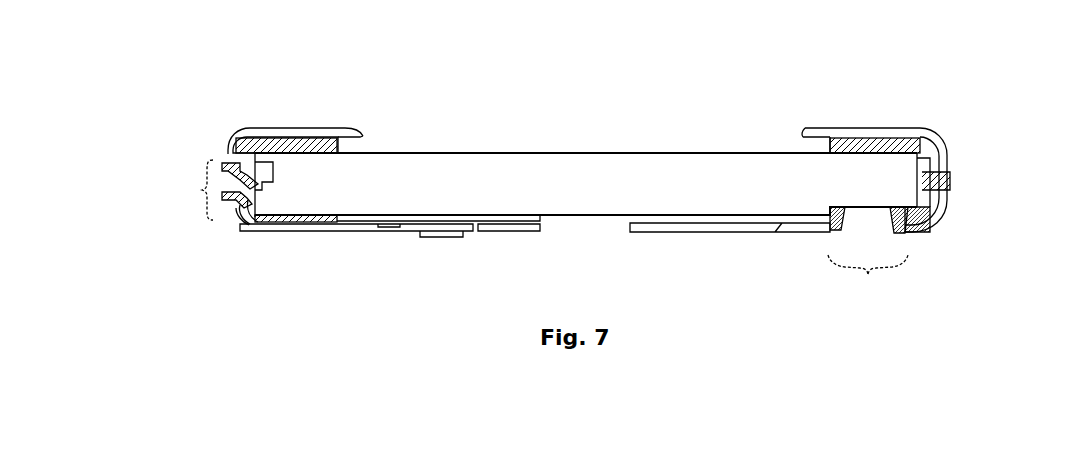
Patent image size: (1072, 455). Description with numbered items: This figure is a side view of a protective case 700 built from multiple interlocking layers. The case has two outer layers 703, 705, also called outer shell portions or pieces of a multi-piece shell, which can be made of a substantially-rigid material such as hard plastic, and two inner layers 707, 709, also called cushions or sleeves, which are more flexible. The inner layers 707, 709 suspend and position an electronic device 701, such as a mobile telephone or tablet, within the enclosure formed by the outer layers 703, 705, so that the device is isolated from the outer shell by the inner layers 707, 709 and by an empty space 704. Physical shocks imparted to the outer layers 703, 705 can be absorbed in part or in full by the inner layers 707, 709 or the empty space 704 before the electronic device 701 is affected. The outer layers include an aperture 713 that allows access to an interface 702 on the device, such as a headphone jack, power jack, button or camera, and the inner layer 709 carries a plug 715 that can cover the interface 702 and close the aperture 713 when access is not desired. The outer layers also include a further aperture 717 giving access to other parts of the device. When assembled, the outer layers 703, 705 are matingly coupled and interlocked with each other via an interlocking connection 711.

The protective case 700 is at (936, 104).
The electronic device 701 is at (652, 194).
The interface 702 is at (273, 190).
The outer layer 703 is at (946, 214).
The empty space 704 is at (701, 213).
The outer layer 705 is at (342, 125).
The inner layer 707 is at (857, 132).
The inner layer 709 is at (298, 128).
The interlocking connection 711 is at (420, 242).
The aperture 713 is at (207, 192).
The plug 715 is at (233, 213).
The aperture 717 is at (868, 257).